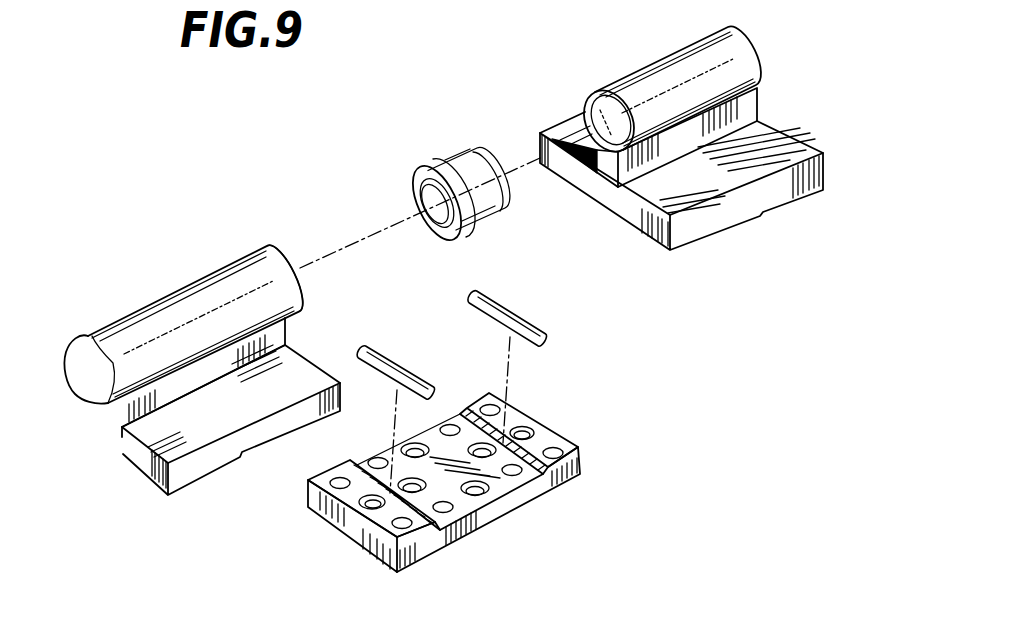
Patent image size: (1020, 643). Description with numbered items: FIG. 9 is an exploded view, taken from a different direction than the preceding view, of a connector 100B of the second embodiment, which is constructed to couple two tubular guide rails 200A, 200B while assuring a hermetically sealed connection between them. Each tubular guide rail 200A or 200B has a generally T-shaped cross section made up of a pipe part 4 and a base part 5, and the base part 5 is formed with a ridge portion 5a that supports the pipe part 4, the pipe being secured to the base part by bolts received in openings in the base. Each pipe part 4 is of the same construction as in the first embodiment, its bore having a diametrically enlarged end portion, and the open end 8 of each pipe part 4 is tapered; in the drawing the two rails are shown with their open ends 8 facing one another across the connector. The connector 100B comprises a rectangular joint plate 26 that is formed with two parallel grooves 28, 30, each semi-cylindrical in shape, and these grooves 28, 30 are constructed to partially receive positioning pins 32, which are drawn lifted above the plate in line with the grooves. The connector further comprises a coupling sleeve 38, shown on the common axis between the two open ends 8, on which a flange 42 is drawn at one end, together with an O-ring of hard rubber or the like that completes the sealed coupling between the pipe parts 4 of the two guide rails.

The pipe part 4 is at (165, 317).
The base part 5 is at (303, 380).
The ridge portion 5a is at (275, 333).
The open end 8 is at (273, 250).
The rectangular joint plate 26 is at (500, 523).
The groove 28 is at (439, 531).
The groove 30 is at (546, 475).
The positioning pin 32 is at (390, 365).
The coupling sleeve 38 is at (483, 163).
The bushing flange 42 is at (440, 160).
The connector 100B is at (450, 125).
The tubular guide rail 200A is at (193, 228).
The tubular guide rail 200B is at (790, 107).